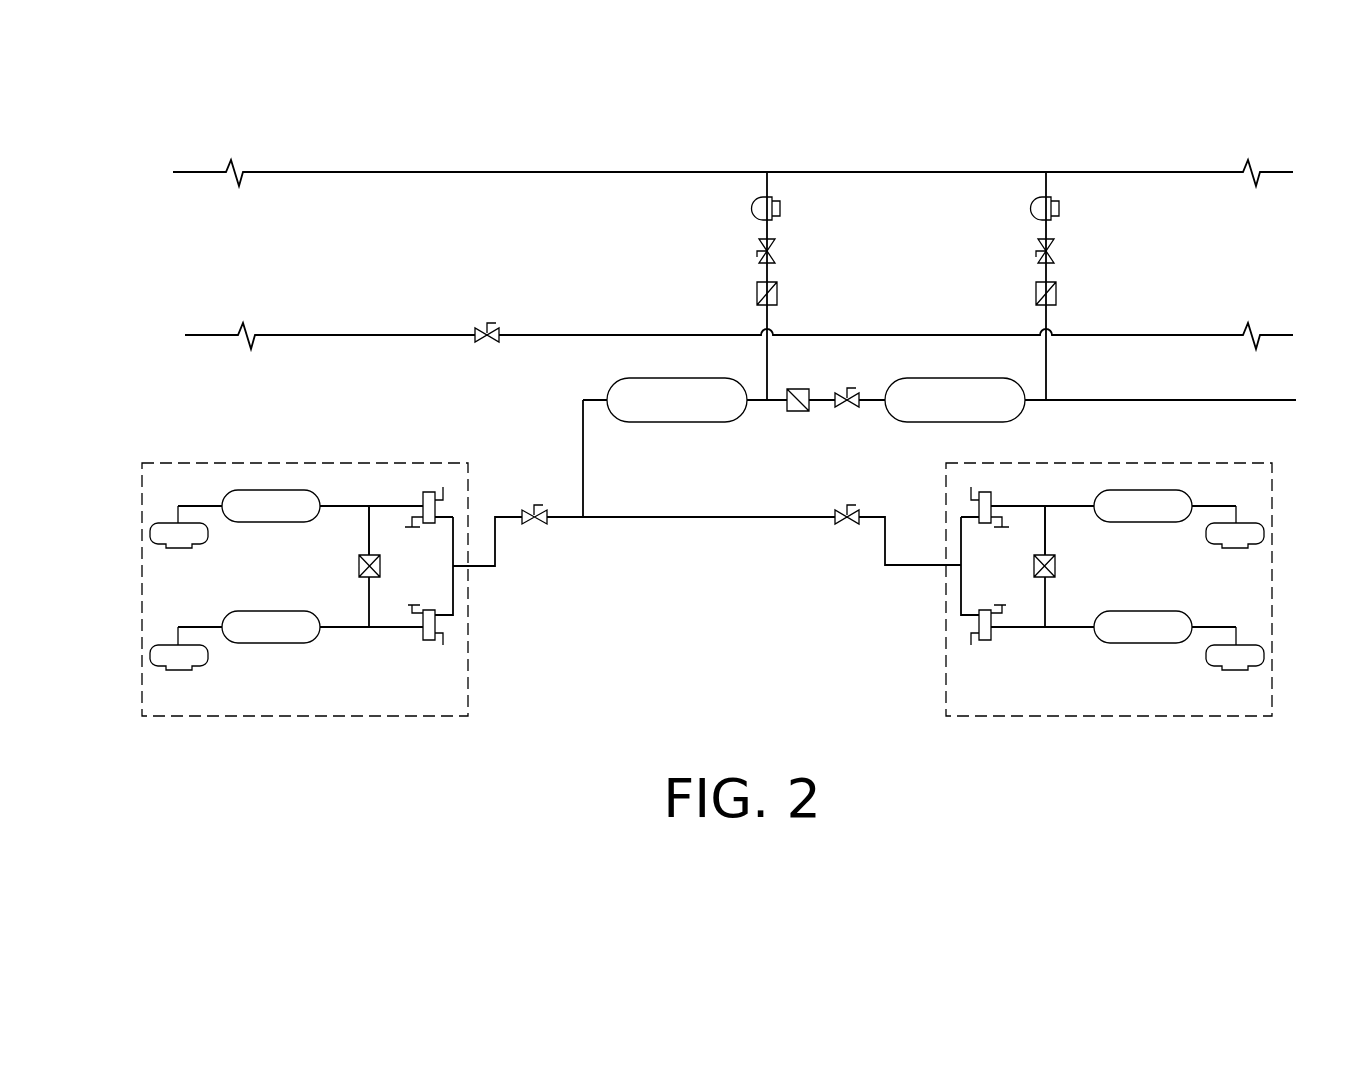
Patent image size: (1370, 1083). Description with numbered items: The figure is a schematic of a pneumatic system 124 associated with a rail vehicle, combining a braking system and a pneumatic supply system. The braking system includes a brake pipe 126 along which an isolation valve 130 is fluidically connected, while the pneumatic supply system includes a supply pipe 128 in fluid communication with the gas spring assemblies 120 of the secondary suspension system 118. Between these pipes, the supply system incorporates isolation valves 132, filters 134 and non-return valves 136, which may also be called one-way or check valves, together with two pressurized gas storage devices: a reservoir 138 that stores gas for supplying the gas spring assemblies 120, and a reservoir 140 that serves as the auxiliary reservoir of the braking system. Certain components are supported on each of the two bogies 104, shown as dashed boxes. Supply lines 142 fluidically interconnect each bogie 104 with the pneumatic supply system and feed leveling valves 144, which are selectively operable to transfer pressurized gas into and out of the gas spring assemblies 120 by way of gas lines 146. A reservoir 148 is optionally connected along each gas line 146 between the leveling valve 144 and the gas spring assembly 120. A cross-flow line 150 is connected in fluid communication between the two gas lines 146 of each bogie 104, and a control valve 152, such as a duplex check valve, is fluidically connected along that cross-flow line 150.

The bogie 104 is at (355, 725).
The secondary suspension system 118 is at (200, 587).
The gas spring assembly 120 is at (168, 522).
The pneumatic system 124 is at (887, 153).
The brake pipe 126 is at (350, 335).
The supply pipe 128 is at (350, 172).
The isolation valve 130 is at (495, 326).
The isolation valve 132 is at (775, 256).
The filter 134 is at (782, 208).
The non-return valve 136 is at (779, 296).
The reservoir 138 is at (655, 414).
The reservoir 140 is at (933, 414).
The supply line 142 is at (455, 598).
The leveling valve 144 is at (428, 492).
The gas line 146 is at (375, 505).
The reservoir 148 is at (280, 506).
The cross-flow line 150 is at (365, 520).
The control valve 152 is at (358, 568).